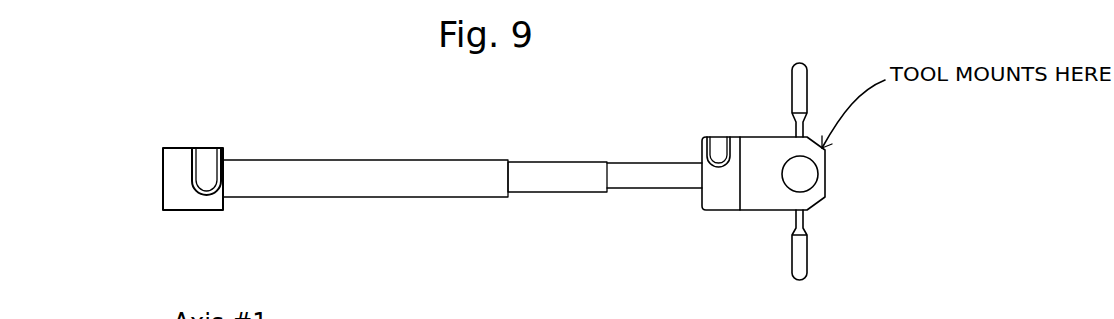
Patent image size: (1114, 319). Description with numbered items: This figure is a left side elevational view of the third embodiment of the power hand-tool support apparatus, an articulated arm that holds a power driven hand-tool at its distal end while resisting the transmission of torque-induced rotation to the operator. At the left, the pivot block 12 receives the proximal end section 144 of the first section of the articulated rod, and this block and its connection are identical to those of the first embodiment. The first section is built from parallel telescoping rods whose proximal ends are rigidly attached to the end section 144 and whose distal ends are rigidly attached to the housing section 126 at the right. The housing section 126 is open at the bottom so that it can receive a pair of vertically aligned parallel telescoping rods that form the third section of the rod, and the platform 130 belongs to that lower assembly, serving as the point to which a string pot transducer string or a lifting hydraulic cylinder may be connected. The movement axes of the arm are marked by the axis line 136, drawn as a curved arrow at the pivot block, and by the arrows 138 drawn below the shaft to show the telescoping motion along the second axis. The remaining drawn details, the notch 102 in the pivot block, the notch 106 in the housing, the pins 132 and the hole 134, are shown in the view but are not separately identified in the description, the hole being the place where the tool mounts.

The pivot block 12 is at (156, 188).
The notch in first block 102 is at (210, 167).
The notch in second block 106 is at (718, 150).
The housing section 126 is at (725, 193).
The platform 130 is at (772, 193).
The pivot pins 132 is at (800, 95).
The tool mounting hole 134 is at (805, 177).
The axis line 136 is at (247, 220).
The arrows 138 is at (588, 215).
The proximal end section 144 is at (413, 177).